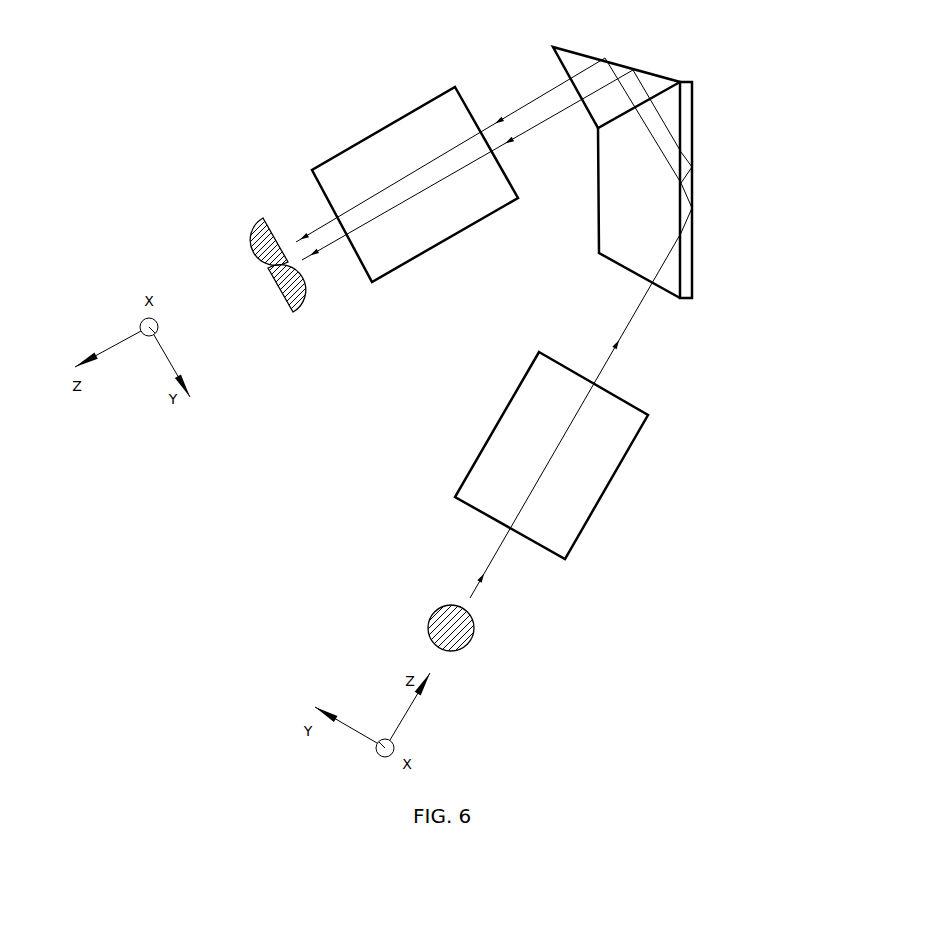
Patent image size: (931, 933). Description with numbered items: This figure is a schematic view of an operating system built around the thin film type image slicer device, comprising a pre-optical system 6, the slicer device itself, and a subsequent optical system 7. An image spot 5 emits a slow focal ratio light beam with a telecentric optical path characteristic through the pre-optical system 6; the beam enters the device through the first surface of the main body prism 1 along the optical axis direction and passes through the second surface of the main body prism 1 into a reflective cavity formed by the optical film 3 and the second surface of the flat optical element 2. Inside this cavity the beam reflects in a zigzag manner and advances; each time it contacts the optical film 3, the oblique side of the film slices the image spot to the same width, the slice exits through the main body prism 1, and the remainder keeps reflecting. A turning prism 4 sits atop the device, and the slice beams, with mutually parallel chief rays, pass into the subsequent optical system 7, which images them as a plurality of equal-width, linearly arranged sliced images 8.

The main body prism 1 is at (697, 291).
The flat optical element 2 is at (738, 217).
The optical film 3 is at (738, 190).
The turning prism 4 is at (675, 64).
The image spot 5 is at (341, 554).
The pre-optical system 6 is at (626, 477).
The subsequent optical system 7 is at (363, 141).
The sliced image 8 is at (258, 298).